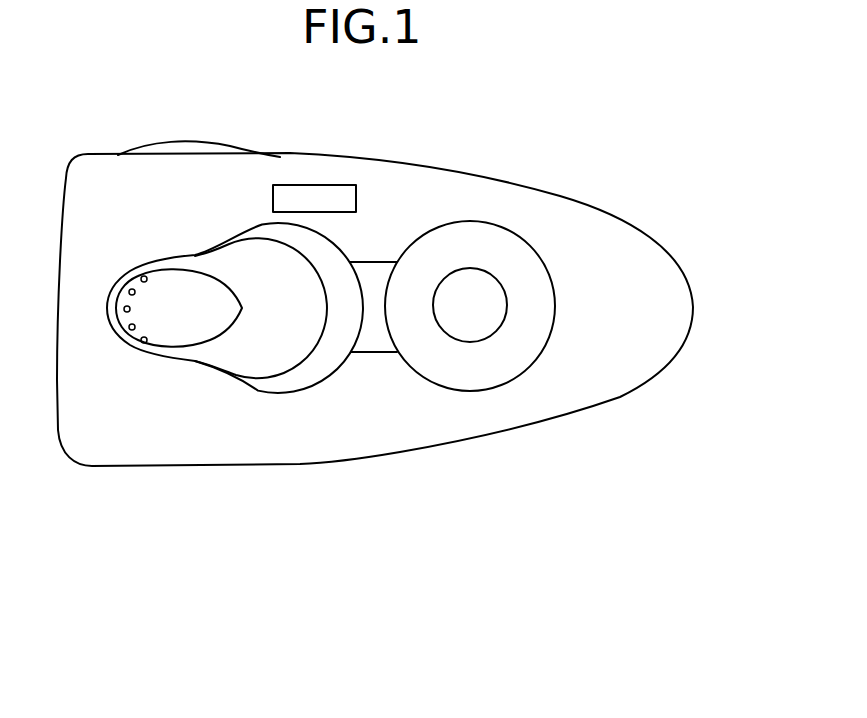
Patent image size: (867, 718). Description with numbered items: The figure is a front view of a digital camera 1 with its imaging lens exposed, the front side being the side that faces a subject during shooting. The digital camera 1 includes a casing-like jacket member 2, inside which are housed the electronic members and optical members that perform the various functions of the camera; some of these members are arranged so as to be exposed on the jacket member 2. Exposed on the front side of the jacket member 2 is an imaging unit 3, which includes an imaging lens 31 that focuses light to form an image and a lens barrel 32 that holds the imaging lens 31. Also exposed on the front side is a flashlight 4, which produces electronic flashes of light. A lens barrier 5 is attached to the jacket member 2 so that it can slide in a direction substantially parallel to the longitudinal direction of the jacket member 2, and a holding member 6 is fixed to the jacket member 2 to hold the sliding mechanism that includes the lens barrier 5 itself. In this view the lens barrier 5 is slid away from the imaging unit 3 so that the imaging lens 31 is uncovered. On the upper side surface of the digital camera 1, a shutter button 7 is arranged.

The digital camera 1 is at (572, 169).
The jacket member 2 is at (660, 308).
The imaging unit 3 is at (560, 477).
The imaging lens 31 is at (503, 323).
The lens barrel 32 is at (475, 365).
The flashlight 4 is at (315, 197).
The lens barrier 5 is at (262, 352).
The holding member 6 is at (373, 338).
The shutter button 7 is at (188, 151).